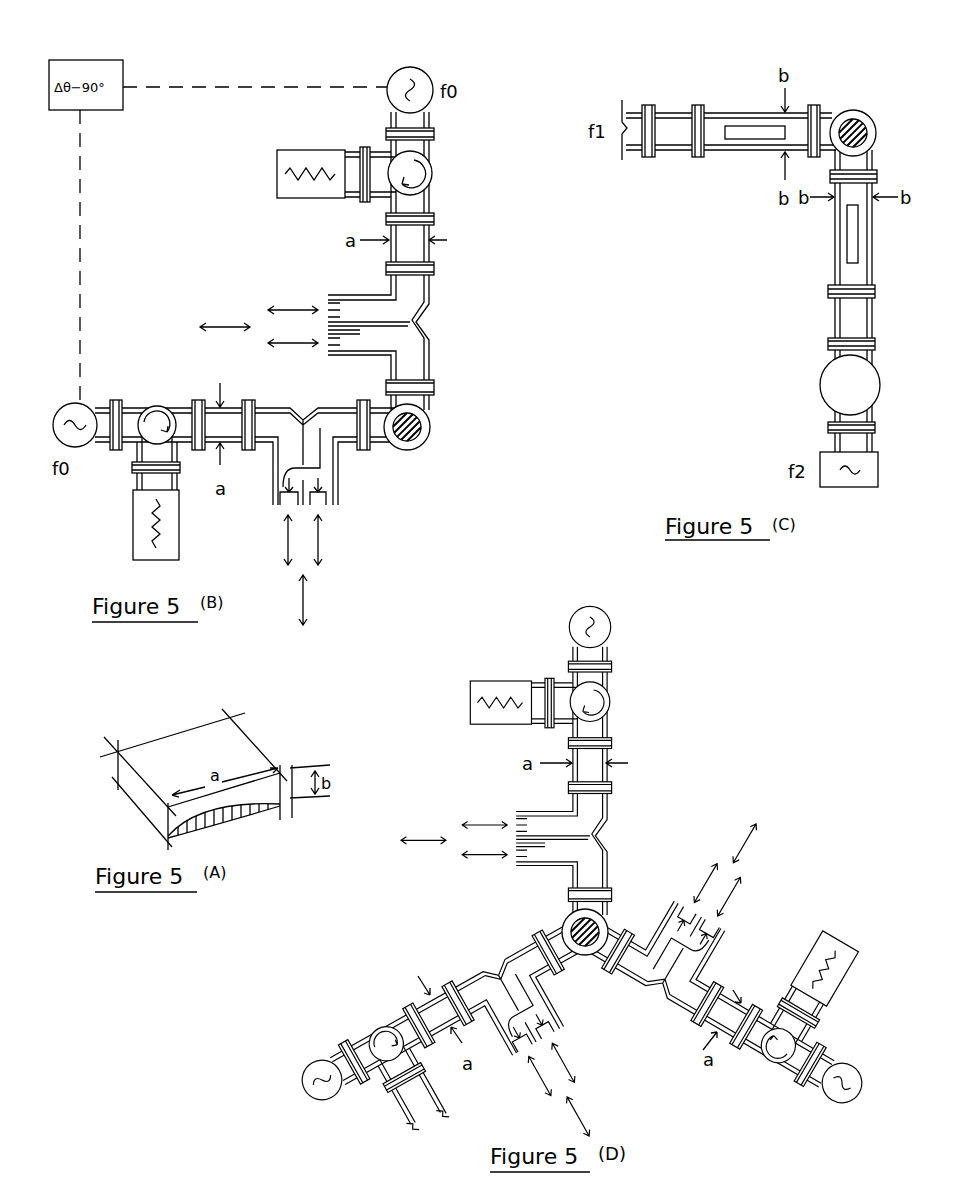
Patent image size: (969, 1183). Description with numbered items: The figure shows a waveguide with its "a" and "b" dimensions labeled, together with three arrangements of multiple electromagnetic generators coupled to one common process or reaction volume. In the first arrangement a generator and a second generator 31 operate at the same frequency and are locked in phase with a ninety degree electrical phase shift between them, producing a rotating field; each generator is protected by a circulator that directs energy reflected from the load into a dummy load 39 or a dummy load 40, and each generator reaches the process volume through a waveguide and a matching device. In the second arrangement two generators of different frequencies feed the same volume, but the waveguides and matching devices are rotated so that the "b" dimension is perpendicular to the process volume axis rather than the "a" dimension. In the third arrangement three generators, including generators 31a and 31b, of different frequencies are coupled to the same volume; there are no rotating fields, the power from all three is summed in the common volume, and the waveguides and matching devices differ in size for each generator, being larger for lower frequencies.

The generator 31 is at (80, 405).
The generator 31a is at (306, 1064).
The generator 31b is at (850, 1067).
The dummy load 39 is at (277, 175).
The dummy load 40 is at (133, 505).